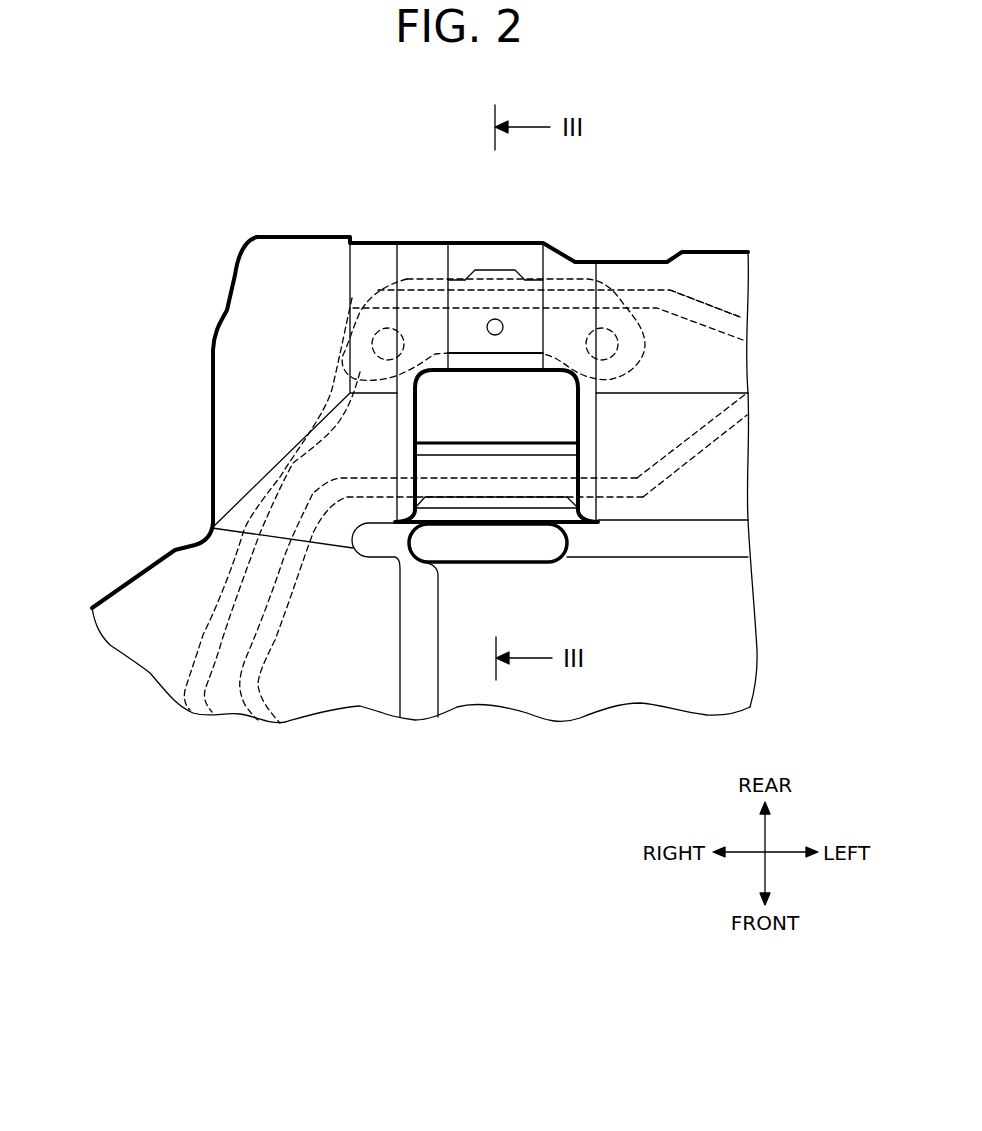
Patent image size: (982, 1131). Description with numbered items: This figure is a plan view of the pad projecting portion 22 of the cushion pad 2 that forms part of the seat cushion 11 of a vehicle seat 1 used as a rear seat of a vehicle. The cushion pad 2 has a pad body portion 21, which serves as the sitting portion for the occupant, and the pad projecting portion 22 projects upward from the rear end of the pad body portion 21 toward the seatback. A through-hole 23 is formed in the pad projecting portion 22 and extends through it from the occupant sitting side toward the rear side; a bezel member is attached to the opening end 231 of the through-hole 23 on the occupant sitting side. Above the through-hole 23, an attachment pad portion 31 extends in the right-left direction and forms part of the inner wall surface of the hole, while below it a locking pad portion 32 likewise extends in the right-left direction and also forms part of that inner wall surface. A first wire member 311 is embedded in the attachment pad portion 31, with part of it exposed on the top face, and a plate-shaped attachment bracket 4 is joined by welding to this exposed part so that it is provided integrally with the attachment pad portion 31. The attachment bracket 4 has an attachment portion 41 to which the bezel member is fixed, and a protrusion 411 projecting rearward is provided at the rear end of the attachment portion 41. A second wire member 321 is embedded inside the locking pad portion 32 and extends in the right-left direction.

The vehicle seat 1 is at (152, 198).
The cushion pad 2 is at (260, 362).
The seat cushion 11 is at (130, 572).
The pad body portion 21 is at (728, 630).
The pad projecting portion 22 is at (730, 360).
The through-hole 23 is at (447, 405).
The opening end 231 is at (600, 420).
The attachment pad portion 31 is at (525, 257).
The first wire member 311 is at (707, 303).
The locking pad portion 32 is at (463, 467).
The second wire member 321 is at (707, 448).
The attachment bracket 4 is at (525, 329).
The attachment portion 41 is at (470, 323).
The protrusion 411 is at (495, 273).